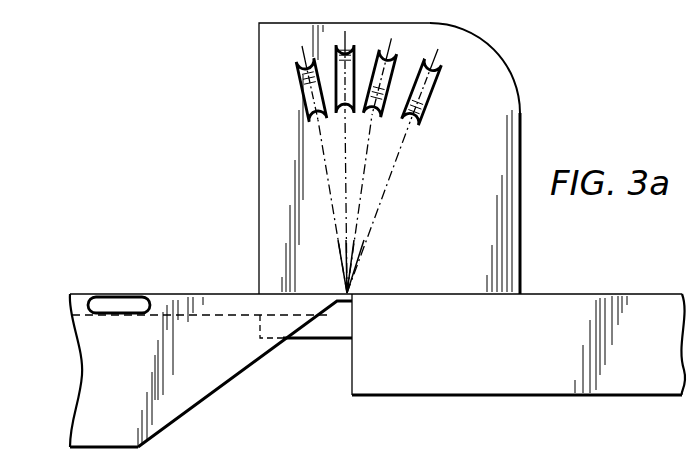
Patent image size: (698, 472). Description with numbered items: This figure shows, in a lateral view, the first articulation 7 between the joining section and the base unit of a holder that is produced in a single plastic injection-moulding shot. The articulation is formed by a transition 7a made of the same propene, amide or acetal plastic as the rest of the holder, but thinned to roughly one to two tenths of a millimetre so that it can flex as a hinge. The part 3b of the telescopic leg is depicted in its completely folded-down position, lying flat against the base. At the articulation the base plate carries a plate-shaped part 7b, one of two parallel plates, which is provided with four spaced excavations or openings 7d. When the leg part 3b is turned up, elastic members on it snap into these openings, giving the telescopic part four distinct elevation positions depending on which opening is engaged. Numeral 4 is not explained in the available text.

The part of the telescopic leg 3b is at (182, 322).
The support block 4 is at (590, 312).
The first articulation 7 is at (311, 355).
The transition 7a is at (352, 293).
The plate-shaped part 7b is at (514, 118).
The openings 7d is at (430, 88).